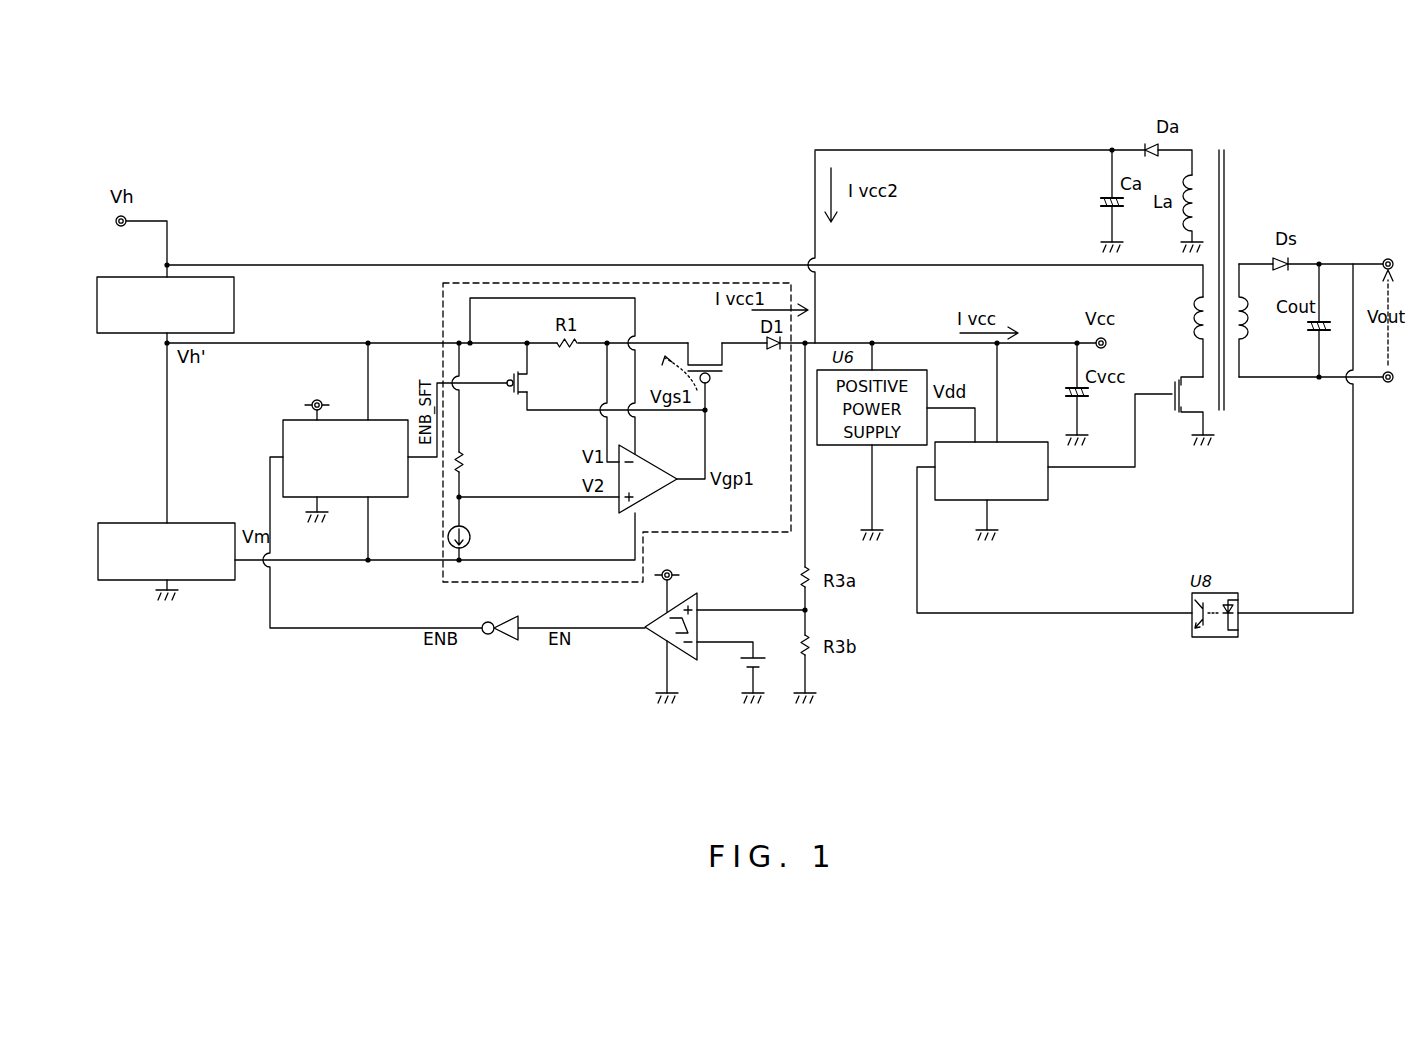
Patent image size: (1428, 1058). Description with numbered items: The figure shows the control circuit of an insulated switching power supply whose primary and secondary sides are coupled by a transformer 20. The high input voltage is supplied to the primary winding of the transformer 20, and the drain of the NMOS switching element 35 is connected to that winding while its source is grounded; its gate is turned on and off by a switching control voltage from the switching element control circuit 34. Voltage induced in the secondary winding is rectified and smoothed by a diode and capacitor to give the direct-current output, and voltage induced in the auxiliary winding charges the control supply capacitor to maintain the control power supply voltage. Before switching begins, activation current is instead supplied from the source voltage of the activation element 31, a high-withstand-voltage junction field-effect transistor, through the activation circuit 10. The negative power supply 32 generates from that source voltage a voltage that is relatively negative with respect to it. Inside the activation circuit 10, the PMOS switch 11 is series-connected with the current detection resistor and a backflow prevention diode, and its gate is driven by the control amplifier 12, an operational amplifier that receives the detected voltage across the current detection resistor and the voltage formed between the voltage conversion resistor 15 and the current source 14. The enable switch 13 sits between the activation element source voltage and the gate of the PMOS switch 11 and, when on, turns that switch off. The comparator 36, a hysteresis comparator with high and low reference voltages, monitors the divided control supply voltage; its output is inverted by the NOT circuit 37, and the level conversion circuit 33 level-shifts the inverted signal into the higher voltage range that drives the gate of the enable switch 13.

The activation circuit 10 is at (478, 283).
The PMOS switch 11 is at (728, 372).
The control amplifier 12 is at (660, 492).
The enable switch 13 is at (518, 396).
The current source 14 is at (468, 531).
The voltage conversion resistor 15 is at (478, 462).
The transformer 20 is at (1252, 212).
The activation element 31 is at (236, 304).
The negative power supply 32 is at (195, 523).
The level conversion circuit 33 is at (399, 420).
The switching element control circuit 34 is at (1030, 500).
The NMOS switching element 35 is at (1173, 418).
The comparator 36 is at (655, 635).
The NOT circuit 37 is at (500, 640).